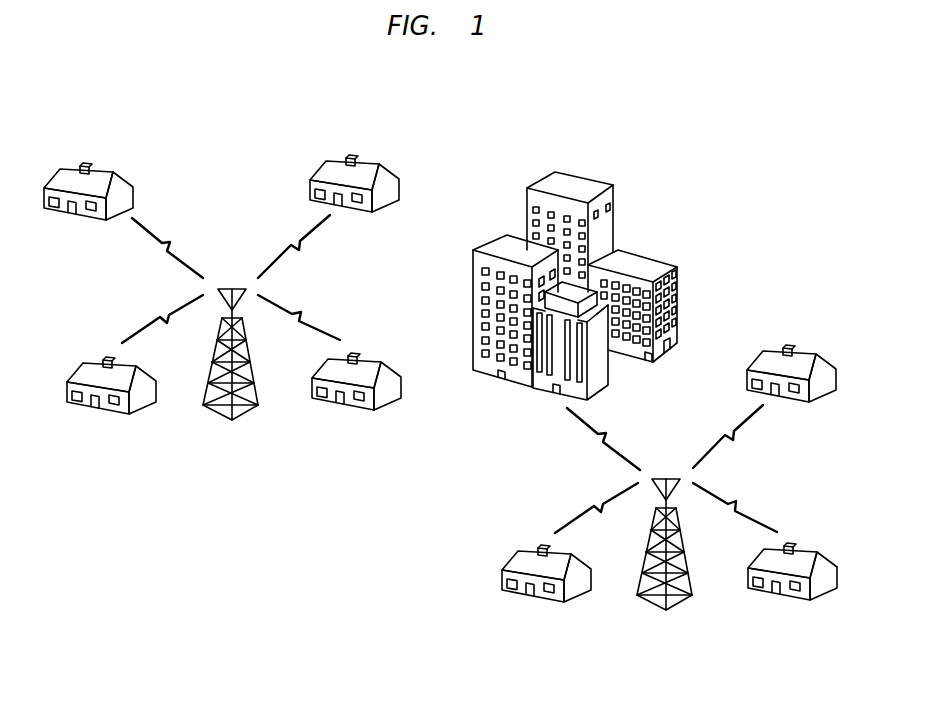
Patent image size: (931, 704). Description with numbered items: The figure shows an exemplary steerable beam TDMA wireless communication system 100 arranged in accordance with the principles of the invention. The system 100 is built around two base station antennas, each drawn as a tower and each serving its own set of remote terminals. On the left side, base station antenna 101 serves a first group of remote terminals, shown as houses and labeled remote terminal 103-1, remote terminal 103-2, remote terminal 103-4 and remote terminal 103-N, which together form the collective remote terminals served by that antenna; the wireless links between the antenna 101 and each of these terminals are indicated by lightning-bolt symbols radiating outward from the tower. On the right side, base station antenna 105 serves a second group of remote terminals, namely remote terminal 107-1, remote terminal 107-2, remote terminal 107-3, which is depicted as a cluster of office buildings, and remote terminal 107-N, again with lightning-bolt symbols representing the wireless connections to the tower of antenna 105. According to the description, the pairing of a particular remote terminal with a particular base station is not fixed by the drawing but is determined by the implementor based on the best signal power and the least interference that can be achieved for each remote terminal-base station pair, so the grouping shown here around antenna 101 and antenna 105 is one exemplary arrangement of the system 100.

The steerable beam TDMA wireless communication system 100 is at (395, 543).
The base station antenna 101 is at (232, 422).
The remote terminal 103-1 is at (115, 170).
The remote terminal 103-2 is at (115, 417).
The remote terminal 103-4 is at (377, 362).
The remote terminal 103-N is at (378, 165).
The base station antenna 105 is at (667, 610).
The remote terminal 107-1 is at (817, 550).
The remote terminal 107-2 is at (813, 355).
The remote terminal 107-3 is at (590, 177).
The remote terminal 107-N is at (550, 607).